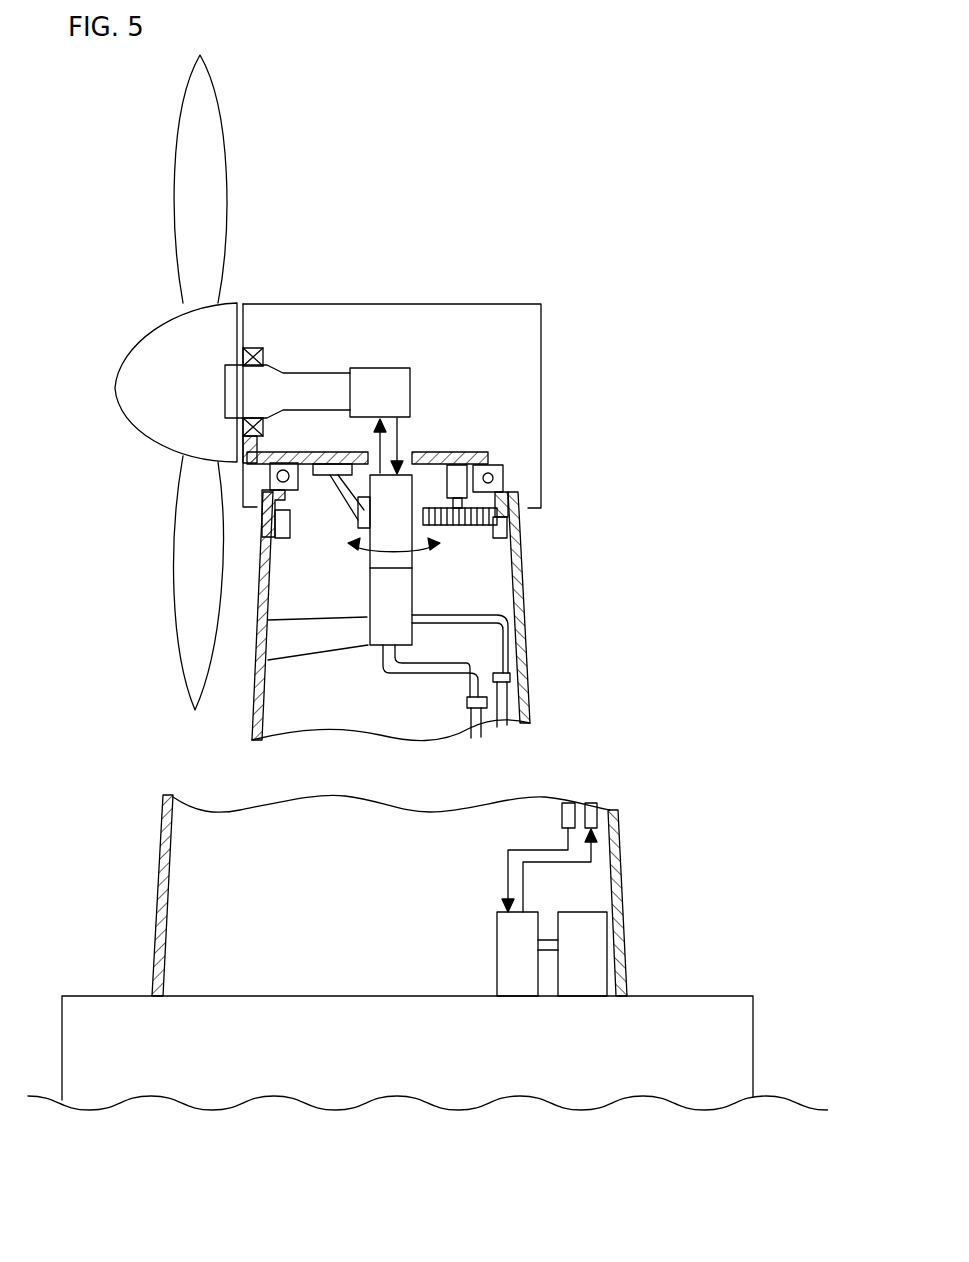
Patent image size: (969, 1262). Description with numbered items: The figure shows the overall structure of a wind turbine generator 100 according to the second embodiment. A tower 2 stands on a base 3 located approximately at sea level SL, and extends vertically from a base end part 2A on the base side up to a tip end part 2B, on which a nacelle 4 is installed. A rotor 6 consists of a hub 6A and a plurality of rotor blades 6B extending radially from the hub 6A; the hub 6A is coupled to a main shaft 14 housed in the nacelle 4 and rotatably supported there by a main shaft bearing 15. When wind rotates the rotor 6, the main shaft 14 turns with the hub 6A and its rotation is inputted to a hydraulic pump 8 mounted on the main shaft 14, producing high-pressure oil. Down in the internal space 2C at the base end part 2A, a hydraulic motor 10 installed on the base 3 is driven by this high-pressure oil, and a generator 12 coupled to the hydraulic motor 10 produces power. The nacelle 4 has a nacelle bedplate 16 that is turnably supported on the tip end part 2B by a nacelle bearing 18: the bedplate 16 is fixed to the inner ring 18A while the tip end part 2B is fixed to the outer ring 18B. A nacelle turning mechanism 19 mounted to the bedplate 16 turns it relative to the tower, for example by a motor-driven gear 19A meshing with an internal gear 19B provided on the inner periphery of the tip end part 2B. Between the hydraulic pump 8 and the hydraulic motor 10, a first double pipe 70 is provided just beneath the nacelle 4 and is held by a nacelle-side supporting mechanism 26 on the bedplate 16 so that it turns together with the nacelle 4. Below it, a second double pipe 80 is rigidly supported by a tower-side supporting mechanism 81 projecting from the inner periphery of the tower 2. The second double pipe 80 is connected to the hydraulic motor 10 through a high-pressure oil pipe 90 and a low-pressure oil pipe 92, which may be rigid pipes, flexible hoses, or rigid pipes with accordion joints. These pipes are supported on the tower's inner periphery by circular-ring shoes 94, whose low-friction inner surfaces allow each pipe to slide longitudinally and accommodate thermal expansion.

The wind turbine generator 100 is at (692, 181).
The tower 2 is at (612, 628).
The base end part 2A is at (620, 862).
The tip end part 2B is at (522, 592).
The internal space 2C is at (290, 907).
The base 3 is at (700, 996).
The nacelle 4 is at (511, 304).
The rotor 6 is at (130, 455).
The hub 6A is at (147, 366).
The rotor blades 6B is at (196, 186).
The hydraulic pump 8 is at (411, 392).
The hydraulic motor 10 is at (491, 954).
The generator 12 is at (584, 912).
The main shaft 14 is at (313, 366).
The main shaft bearing 15 is at (254, 350).
The nacelle bedplate 16 is at (290, 454).
The nacelle bearing 18 is at (628, 426).
The inner ring 18A is at (488, 464).
The outer ring 18B is at (503, 477).
The nacelle turning mechanism 19 is at (628, 510).
The gear 19A is at (508, 522).
The internal gear 19B is at (507, 540).
The nacelle-side supporting mechanism 26 is at (283, 492).
The first double pipe 70 is at (435, 530).
The second double pipe 80 is at (412, 573).
The tower-side supporting mechanism 81 is at (315, 640).
The high-pressure oil pipe 90 is at (432, 680).
The low-pressure oil pipe 92 is at (508, 650).
The shoes 94 is at (495, 676).
The sea level SL is at (778, 1093).